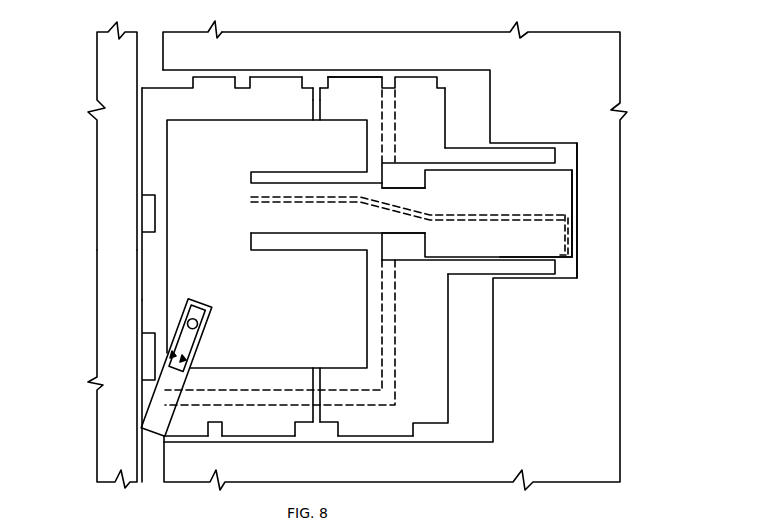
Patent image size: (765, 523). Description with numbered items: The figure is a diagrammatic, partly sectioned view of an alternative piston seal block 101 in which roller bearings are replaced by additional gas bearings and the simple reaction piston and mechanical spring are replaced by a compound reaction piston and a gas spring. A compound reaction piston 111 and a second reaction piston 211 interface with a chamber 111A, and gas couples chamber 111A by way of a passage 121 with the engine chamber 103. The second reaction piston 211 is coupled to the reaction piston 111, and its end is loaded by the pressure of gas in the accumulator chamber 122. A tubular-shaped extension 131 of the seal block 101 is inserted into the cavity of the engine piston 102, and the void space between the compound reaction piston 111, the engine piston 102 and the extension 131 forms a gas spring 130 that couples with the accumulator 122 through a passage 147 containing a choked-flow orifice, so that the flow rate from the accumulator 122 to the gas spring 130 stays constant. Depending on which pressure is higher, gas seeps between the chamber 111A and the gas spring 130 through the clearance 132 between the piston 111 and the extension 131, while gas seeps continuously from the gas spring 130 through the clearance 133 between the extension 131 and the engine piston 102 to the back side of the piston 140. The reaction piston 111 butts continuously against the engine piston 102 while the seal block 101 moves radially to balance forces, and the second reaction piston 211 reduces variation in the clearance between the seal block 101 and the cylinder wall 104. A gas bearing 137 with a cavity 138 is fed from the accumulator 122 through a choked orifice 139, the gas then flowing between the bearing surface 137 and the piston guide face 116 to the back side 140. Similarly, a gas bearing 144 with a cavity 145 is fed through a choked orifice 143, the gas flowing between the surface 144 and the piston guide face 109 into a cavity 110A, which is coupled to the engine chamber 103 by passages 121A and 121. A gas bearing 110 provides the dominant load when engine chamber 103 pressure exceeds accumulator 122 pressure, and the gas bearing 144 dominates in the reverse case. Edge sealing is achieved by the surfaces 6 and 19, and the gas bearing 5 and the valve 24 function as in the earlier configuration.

The gas bearing 5 is at (138, 162).
The edge sealing surface 6 is at (142, 413).
The edge sealing surface 19 is at (188, 438).
The valve 24 is at (205, 333).
The seal block 101 is at (447, 142).
The engine piston 102 is at (620, 143).
The engine chamber 103 is at (152, 468).
The cylinder wall 104 is at (136, 75).
The piston guide face 109 is at (320, 70).
The gas bearing 110 is at (415, 76).
The cavity 110A is at (247, 83).
The compound reaction piston 111 is at (578, 207).
The chamber 111A is at (402, 177).
The piston guide face 116 is at (320, 440).
The passage 121 is at (388, 330).
The passage 121A is at (387, 135).
The accumulator chamber 122 is at (217, 225).
The gas spring 130 is at (565, 268).
The tubular-shaped extension 131 is at (503, 275).
The clearance 132 is at (530, 257).
The clearance 133 is at (530, 147).
The gas bearing 137 is at (377, 440).
The gas bearing cavity 138 is at (308, 430).
The choked orifice 139 is at (317, 373).
The back side of the piston 140 is at (150, 42).
The choked orifice 143 is at (317, 117).
The gas bearing 144 is at (353, 73).
The gas bearing cavity 145 is at (315, 83).
The passage 147 is at (505, 215).
The second reaction piston 211 is at (252, 212).